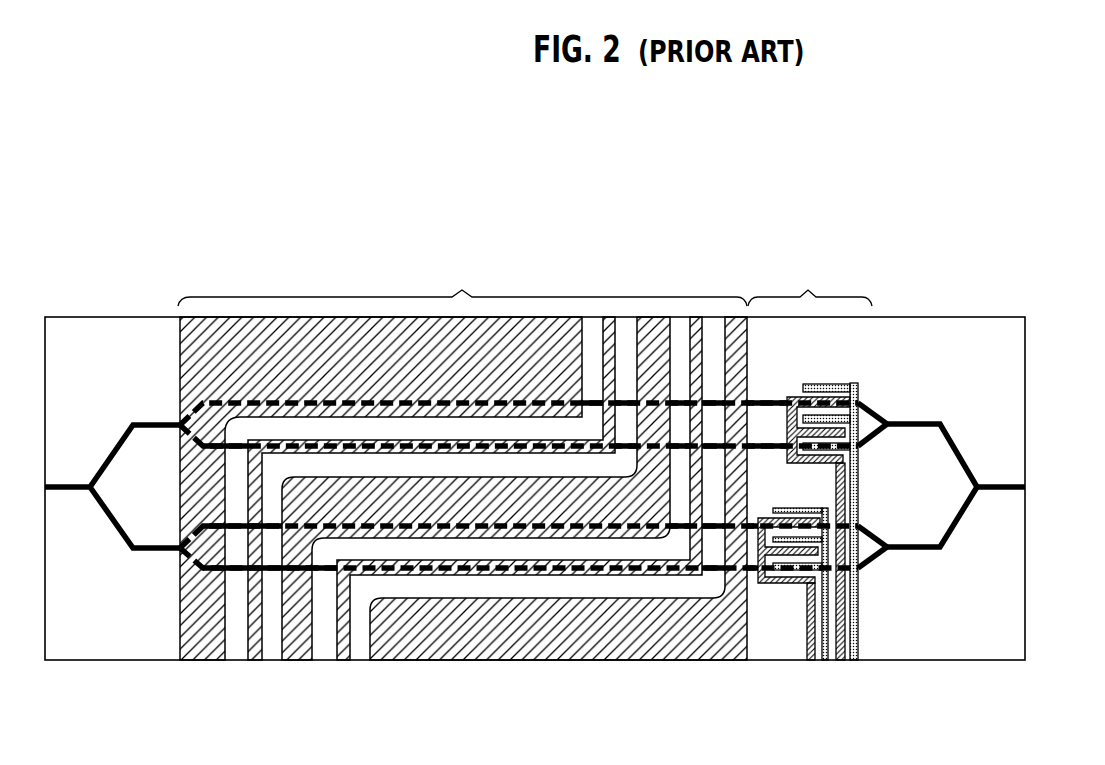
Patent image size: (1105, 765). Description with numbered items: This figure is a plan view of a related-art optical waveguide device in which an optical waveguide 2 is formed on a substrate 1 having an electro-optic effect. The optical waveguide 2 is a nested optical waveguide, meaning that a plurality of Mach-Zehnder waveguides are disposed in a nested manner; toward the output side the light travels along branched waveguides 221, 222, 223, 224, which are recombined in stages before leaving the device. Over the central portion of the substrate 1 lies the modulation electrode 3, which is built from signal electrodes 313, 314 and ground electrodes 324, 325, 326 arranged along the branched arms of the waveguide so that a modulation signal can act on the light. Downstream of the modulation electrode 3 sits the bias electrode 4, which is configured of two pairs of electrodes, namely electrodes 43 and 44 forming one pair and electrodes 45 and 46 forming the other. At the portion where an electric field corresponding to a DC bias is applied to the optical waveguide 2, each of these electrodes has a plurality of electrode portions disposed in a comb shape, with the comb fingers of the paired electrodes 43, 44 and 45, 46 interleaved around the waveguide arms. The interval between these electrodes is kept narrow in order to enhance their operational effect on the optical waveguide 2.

The substrate 1 is at (993, 631).
The optical waveguide 2 is at (1005, 484).
The modulation electrode 3 is at (462, 281).
The bias electrode 4 is at (810, 281).
The electrode 43 is at (811, 660).
The electrode 44 is at (825, 660).
The electrode 45 is at (840, 660).
The electrode 46 is at (856, 660).
The branched waveguide 221 is at (867, 570).
The branched waveguide 222 is at (867, 520).
The branched waveguide 223 is at (867, 448).
The branched waveguide 224 is at (867, 400).
The signal electrode 313 is at (345, 660).
The signal electrode 314 is at (254, 660).
The ground electrode 324 is at (430, 660).
The ground electrode 325 is at (652, 317).
The ground electrode 326 is at (265, 317).